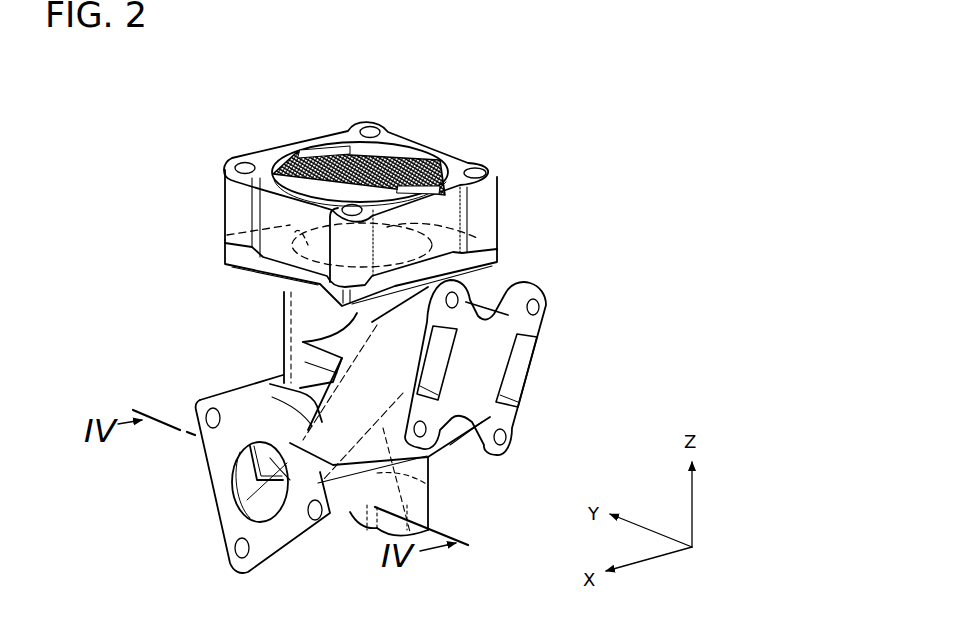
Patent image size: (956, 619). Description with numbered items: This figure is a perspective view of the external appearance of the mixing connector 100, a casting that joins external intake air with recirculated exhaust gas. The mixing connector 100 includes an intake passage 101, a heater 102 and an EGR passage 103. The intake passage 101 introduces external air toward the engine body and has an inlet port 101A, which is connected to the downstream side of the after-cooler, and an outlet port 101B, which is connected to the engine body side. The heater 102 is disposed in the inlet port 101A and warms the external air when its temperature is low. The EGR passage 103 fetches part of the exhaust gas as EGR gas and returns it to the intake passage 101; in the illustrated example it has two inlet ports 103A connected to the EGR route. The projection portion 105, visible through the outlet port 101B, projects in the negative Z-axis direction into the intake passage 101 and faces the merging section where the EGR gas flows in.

The mixing connector 100 is at (112, 142).
The intake passage 101 is at (290, 330).
The inlet port 101A is at (312, 228).
The outlet port 101B is at (253, 497).
The heater 102 is at (498, 203).
The EGR passage 103 is at (427, 487).
The inlet port 103A is at (445, 345).
The projection portion 105 is at (247, 468).